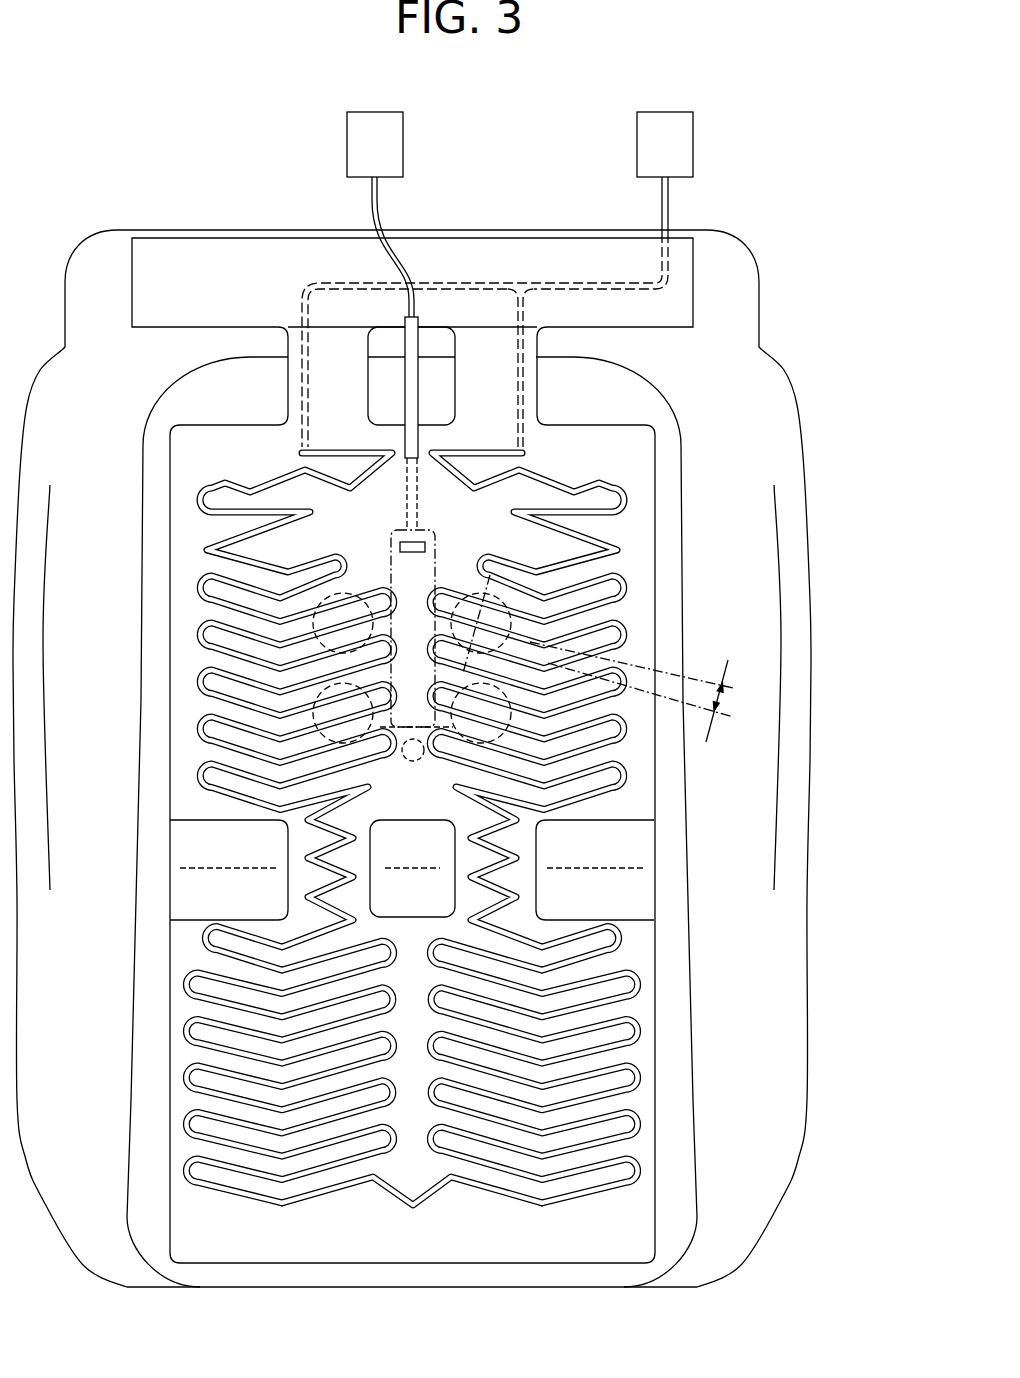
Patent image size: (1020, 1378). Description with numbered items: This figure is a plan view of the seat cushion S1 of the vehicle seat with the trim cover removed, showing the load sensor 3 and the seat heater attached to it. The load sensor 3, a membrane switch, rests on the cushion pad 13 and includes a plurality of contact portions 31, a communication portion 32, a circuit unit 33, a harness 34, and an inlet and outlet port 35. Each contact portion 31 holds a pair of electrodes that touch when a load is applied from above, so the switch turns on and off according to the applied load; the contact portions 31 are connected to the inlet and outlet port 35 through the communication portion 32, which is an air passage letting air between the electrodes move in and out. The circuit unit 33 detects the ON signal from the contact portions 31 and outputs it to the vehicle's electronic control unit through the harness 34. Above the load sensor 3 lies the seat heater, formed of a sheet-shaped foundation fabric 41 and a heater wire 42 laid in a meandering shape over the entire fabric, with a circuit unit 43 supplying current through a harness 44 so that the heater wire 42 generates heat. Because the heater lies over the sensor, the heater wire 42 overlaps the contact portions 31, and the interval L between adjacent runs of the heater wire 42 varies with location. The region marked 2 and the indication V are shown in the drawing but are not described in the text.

The occupant detection region 2 is at (413, 750).
The load sensor 3 is at (442, 555).
The cushion pad 13 is at (752, 965).
The contact portions 31 is at (330, 648).
The communication portion 32 is at (410, 572).
The circuit unit 33 is at (385, 142).
The harness 34 is at (370, 203).
The inlet and outlet port 35 is at (413, 762).
The foundation fabric 41 is at (643, 457).
The heater wire 42 is at (623, 513).
The circuit unit 43 is at (675, 142).
The harness 44 is at (660, 203).
The seat cushion S1 is at (808, 192).
The vibration direction V is at (492, 588).
The interval L is at (635, 692).